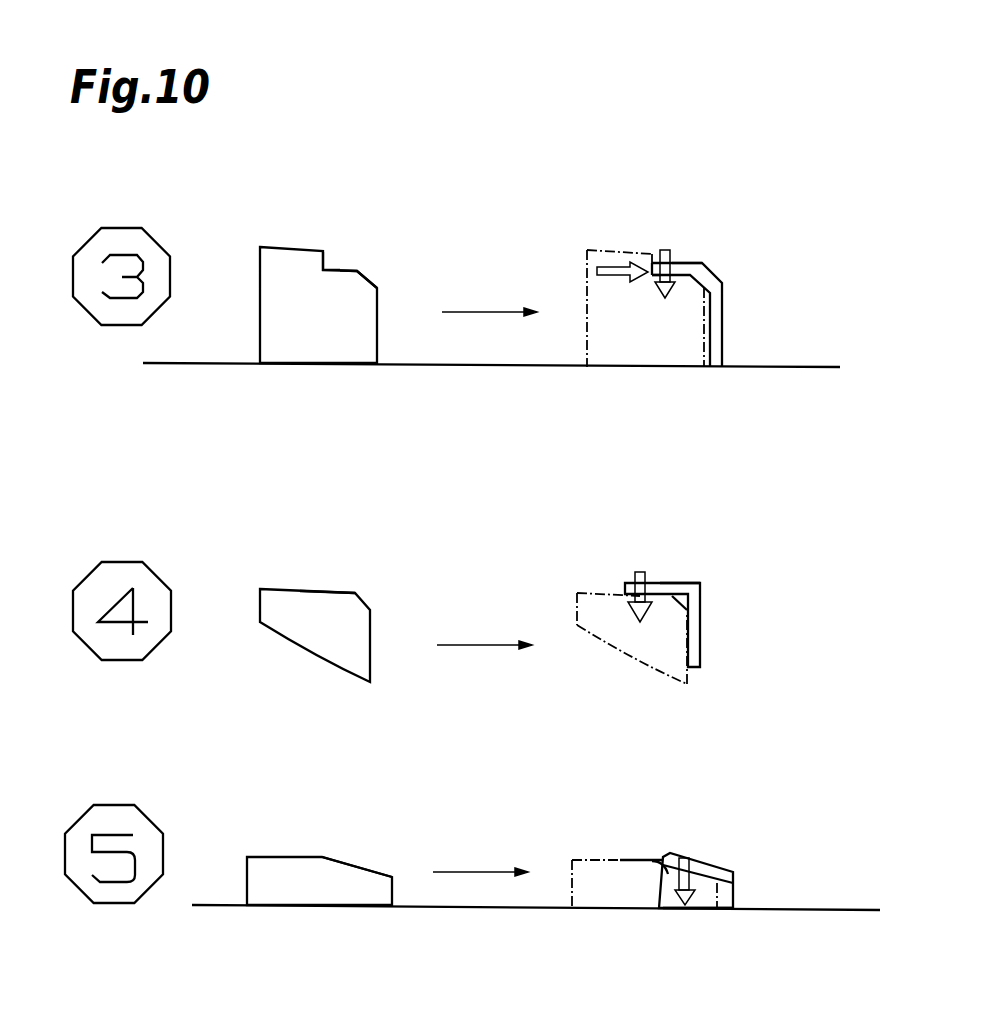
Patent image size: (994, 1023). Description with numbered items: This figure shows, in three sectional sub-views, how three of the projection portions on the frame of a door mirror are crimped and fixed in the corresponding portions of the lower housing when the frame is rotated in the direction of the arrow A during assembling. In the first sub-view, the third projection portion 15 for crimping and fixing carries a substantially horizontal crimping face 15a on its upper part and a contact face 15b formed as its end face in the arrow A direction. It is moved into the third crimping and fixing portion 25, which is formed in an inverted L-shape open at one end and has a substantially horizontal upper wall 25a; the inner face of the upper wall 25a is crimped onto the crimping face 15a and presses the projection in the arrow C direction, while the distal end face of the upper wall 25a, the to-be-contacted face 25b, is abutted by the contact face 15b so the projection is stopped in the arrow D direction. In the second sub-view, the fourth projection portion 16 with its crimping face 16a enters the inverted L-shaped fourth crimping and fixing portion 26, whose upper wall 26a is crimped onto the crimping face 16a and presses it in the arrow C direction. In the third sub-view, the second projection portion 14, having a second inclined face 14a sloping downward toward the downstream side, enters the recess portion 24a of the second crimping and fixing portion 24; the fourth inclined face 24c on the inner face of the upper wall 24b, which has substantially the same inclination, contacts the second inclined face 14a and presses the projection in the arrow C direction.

The second projection portion for crimping and fixing 14 is at (333, 887).
The second inclined face 14a is at (353, 862).
The third projection portion for crimping and fixing 15 is at (317, 328).
The crimping face 15a is at (343, 270).
The contact face 15b is at (327, 262).
The fourth projection portion for crimping and fixing 16 is at (312, 623).
The crimping face 16a is at (323, 590).
The second crimping and fixing portion 24 is at (738, 898).
The recess portion 24a is at (705, 902).
The upper wall 24b is at (707, 868).
The fourth inclined face 24c is at (653, 862).
The third crimping and fixing portion 25 is at (722, 333).
The upper wall 25a is at (677, 263).
The to-be-contacted face 25b is at (648, 277).
The fourth crimping and fixing portion 26 is at (700, 633).
The upper wall 26a is at (682, 583).
The arrow A is at (488, 312).
The arrow C is at (666, 250).
The arrow D is at (615, 267).